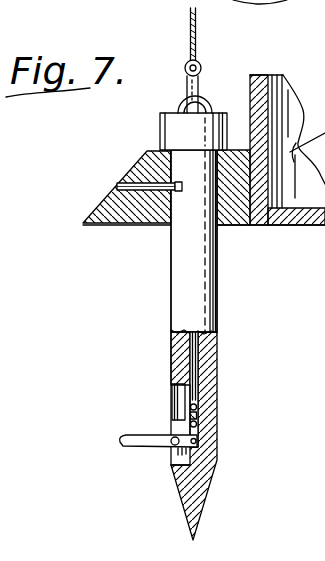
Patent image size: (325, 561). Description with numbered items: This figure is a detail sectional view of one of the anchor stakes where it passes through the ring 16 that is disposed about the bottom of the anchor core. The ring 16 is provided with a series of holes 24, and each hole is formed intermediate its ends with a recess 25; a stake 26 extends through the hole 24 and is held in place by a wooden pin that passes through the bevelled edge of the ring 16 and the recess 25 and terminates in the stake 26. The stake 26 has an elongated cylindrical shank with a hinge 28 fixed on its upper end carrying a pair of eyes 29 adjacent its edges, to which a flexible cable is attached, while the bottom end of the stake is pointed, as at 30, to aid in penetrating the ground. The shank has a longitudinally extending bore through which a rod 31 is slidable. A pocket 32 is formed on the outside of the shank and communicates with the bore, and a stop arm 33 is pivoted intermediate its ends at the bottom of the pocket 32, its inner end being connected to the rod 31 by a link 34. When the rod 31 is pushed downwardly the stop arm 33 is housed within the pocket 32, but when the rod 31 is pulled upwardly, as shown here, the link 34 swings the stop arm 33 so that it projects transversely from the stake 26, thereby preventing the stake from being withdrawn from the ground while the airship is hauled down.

The ring 16 is at (131, 223).
The holes 24 is at (163, 217).
The recesses 25 is at (146, 164).
The stake 26 is at (117, 186).
The hinge 28 is at (172, 125).
The eyes 29 is at (206, 103).
The pointed end 30 is at (200, 503).
The rod 31 is at (193, 357).
The pocket 32 is at (172, 404).
The stop arm 33 is at (148, 443).
The link 34 is at (191, 424).